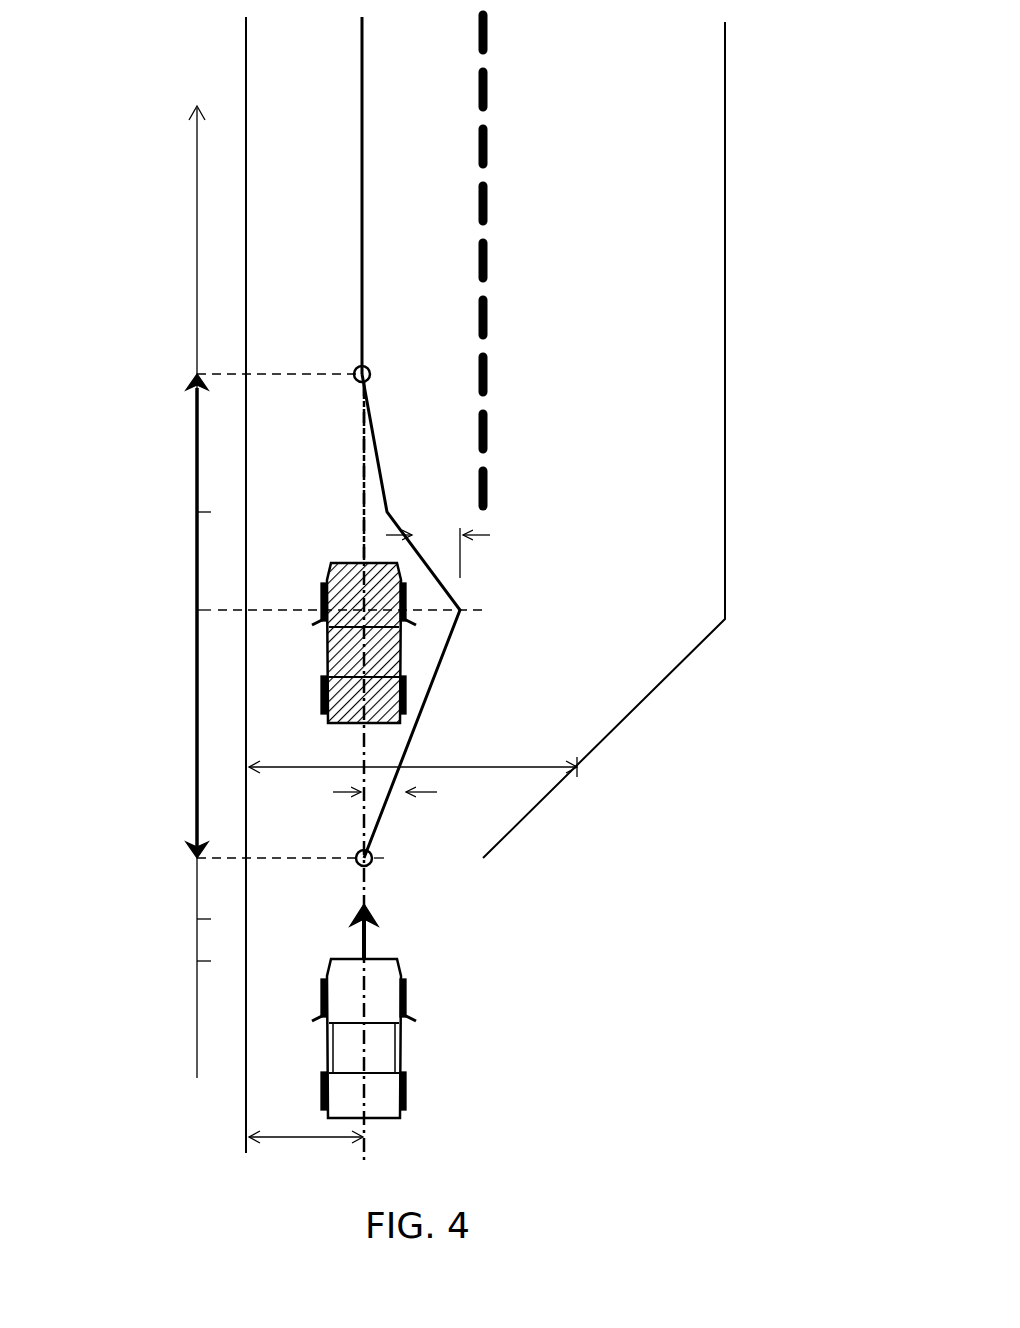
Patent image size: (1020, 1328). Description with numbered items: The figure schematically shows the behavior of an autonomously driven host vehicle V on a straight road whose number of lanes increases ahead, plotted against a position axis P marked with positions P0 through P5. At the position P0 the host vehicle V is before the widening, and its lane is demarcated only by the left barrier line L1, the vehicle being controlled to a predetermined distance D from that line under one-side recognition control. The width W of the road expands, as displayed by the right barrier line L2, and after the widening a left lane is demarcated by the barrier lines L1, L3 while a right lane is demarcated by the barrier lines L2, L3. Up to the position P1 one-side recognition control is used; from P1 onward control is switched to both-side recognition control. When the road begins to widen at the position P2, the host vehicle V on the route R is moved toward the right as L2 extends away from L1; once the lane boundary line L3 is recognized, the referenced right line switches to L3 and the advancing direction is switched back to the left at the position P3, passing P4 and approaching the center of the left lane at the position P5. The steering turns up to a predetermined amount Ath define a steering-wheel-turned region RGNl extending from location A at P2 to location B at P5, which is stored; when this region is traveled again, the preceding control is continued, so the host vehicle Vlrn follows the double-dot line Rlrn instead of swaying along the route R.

The barrier line L1 is at (246, 51).
The barrier line L2 is at (727, 52).
The barrier line L3 is at (483, 51).
The location A is at (372, 862).
The location B is at (370, 370).
The route R is at (440, 700).
The host vehicle V is at (405, 1030).
The host vehicle Vlrn is at (322, 658).
The double-dot line Rlrn is at (362, 480).
The steering-wheel-turned region RGNl is at (197, 700).
The predetermined amount Ath is at (418, 676).
The width W is at (413, 759).
The predetermined distance D is at (306, 1149).
The position P is at (132, 586).
The position P0 is at (184, 961).
The position P1 is at (184, 919).
The position P2 is at (270, 858).
The position P3 is at (321, 610).
The position P4 is at (184, 512).
The position P5 is at (256, 374).